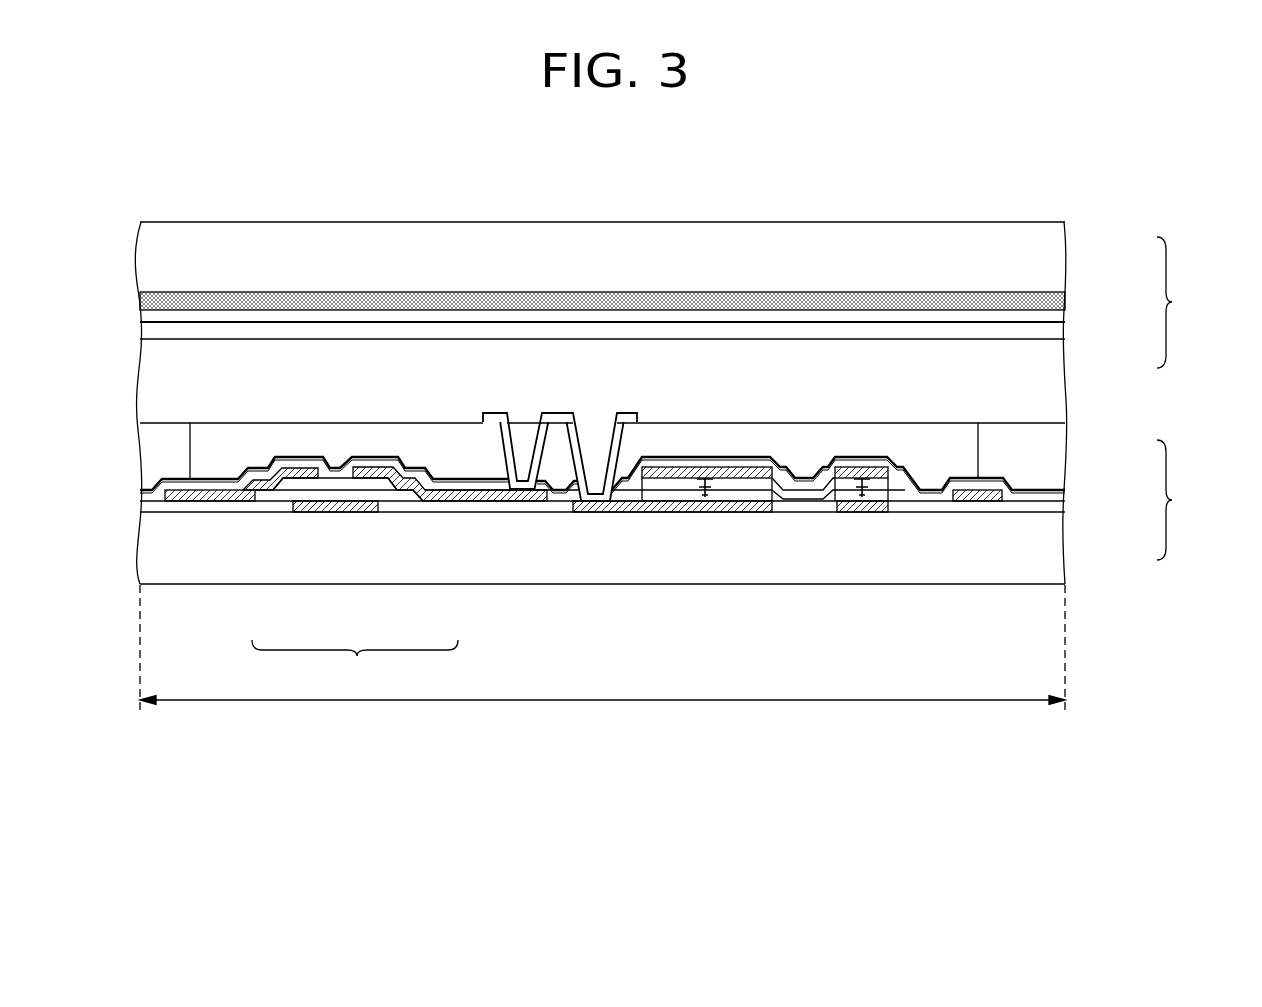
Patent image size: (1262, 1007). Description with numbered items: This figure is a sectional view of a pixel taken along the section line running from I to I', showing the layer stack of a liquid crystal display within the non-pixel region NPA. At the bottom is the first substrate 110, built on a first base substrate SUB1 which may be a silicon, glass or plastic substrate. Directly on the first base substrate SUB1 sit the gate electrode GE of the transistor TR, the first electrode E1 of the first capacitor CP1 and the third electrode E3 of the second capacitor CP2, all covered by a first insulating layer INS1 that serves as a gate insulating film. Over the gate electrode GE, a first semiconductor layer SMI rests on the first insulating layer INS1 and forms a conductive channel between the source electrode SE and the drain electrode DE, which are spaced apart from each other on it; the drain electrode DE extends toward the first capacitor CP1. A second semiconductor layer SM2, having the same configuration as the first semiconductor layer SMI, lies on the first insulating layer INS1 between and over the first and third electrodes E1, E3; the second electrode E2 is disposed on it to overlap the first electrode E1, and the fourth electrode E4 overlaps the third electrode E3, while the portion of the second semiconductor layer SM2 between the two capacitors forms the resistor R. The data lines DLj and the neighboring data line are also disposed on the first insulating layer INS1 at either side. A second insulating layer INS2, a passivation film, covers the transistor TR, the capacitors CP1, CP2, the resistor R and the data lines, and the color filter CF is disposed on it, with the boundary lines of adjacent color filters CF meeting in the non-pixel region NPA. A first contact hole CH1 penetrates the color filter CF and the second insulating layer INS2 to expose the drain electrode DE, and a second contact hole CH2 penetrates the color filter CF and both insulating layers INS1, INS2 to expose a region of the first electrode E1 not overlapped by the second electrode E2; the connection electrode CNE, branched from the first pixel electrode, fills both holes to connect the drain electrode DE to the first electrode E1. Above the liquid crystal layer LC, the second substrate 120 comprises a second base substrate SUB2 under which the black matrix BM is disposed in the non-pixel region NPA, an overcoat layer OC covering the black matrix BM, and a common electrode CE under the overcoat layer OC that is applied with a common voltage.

The second base substrate SUB2 is at (1050, 253).
The black matrix BM is at (1050, 298).
The overcoat layer OC is at (1050, 321).
The common electrode CE is at (1050, 339).
The second substrate 120 is at (1184, 302).
The liquid crystal layer LC is at (1050, 385).
The color filter CF is at (1050, 455).
The second insulating layer INS2 is at (1050, 491).
The first insulating layer INS1 is at (1050, 503).
The first base substrate SUB1 is at (1050, 545).
The first substrate 110 is at (1184, 500).
The data line DLj is at (178, 500).
The source electrode SE is at (262, 487).
The gate electrode GE is at (335, 506).
The first semiconductor layer SMI is at (397, 496).
The drain electrode DE is at (445, 495).
The transistor TR is at (355, 662).
The connection electrode CNE is at (558, 414).
The first contact hole CH1 is at (523, 430).
The second contact hole CH2 is at (600, 430).
The second semiconductor layer SM2 is at (657, 486).
The first capacitor CP1 is at (697, 492).
The first electrode E1 is at (699, 503).
The second electrode E2 is at (740, 472).
The resistor R is at (812, 493).
The fourth electrode E4 is at (848, 476).
The third electrode E3 is at (865, 505).
The second capacitor CP2 is at (874, 491).
The non-pixel region NPA is at (602, 659).
The section line I-I' I is at (140, 732).
The section line I- I' is at (1067, 732).